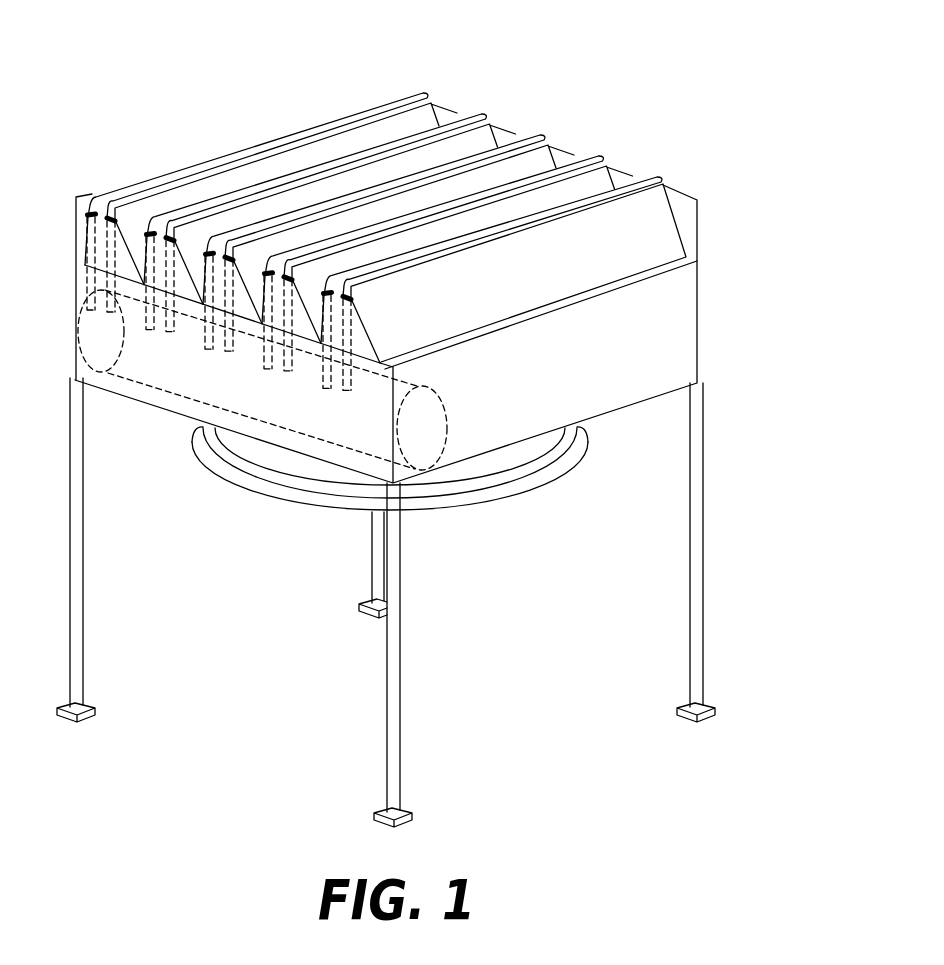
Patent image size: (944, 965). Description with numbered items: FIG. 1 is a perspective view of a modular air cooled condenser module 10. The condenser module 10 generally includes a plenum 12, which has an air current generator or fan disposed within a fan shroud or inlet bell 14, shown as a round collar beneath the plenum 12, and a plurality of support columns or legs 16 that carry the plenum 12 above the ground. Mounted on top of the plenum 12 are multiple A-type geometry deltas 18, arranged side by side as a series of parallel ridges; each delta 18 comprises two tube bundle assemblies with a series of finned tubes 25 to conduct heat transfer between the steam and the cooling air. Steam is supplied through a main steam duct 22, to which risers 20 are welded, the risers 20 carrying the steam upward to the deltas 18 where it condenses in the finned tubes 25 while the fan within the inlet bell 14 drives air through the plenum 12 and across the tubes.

The air cooled condenser module 10 is at (755, 88).
The plenum 12 is at (670, 332).
The fan shroud or inlet bell 14 is at (493, 502).
The support columns or legs 16 is at (78, 592).
The A-type geometry deltas 18 is at (423, 217).
The risers 20 is at (205, 333).
The main steam duct 22 is at (447, 402).
The finned tubes 25 is at (630, 245).